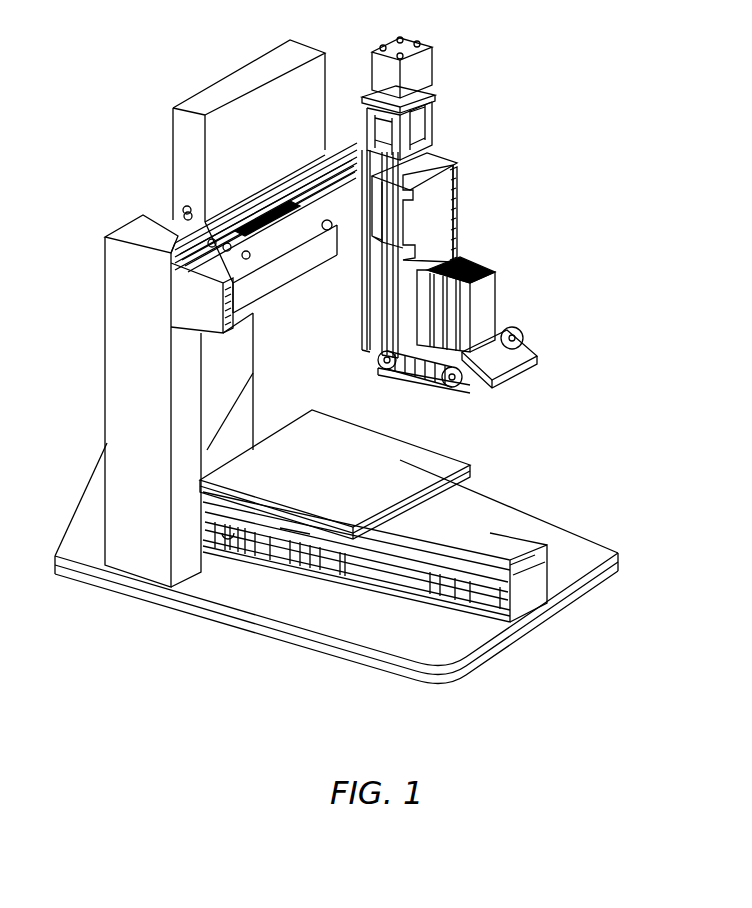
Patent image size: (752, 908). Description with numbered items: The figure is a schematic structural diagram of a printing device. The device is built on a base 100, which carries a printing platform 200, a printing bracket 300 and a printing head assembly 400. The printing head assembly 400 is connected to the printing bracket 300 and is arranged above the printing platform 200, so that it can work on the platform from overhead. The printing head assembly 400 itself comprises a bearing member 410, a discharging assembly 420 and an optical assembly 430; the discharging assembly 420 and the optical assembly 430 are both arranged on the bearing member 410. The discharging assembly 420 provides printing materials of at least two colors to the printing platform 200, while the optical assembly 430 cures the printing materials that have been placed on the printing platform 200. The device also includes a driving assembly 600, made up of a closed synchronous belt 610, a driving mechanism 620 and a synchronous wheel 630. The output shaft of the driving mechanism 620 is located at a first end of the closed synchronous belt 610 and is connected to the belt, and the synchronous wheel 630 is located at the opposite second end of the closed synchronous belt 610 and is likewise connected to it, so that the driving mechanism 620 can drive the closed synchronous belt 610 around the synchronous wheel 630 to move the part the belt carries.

The base 100 is at (332, 628).
The printing platform 200 is at (343, 508).
The printing bracket 300 is at (128, 225).
The printing head assembly 400 is at (537, 212).
The bearing member 410 is at (457, 230).
The discharging assembly 420 is at (478, 325).
The optical assembly 430 is at (522, 353).
The driving assembly 600 is at (471, 392).
The closed synchronous belt 610 is at (430, 385).
The driving mechanism 620 is at (526, 373).
The synchronous wheel 630 is at (404, 387).